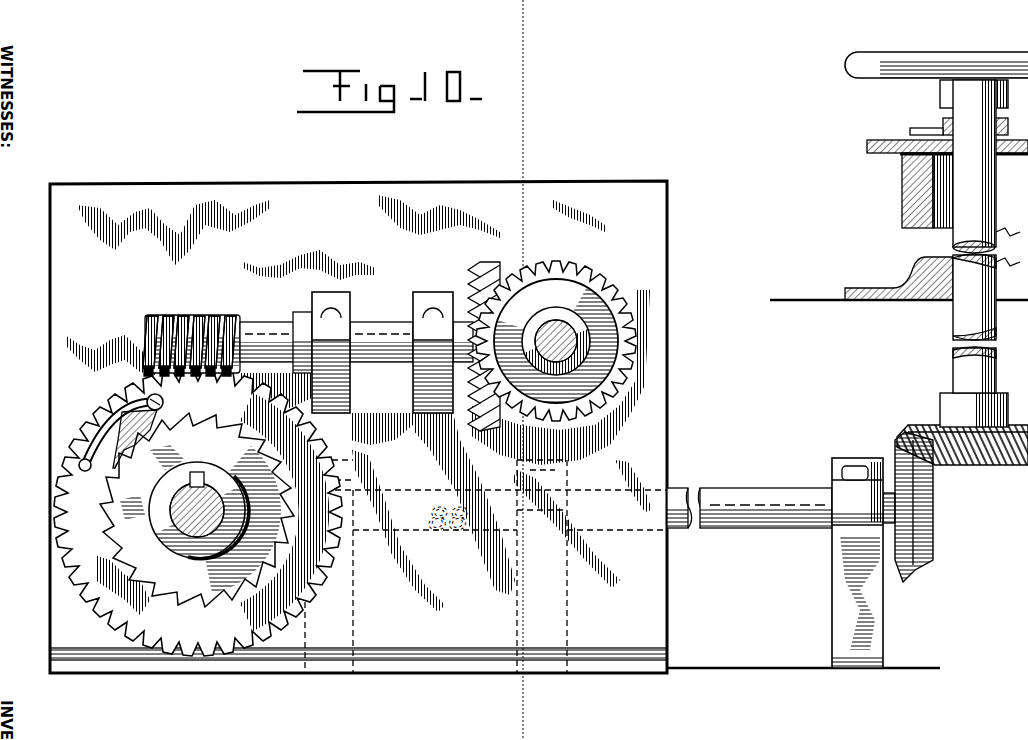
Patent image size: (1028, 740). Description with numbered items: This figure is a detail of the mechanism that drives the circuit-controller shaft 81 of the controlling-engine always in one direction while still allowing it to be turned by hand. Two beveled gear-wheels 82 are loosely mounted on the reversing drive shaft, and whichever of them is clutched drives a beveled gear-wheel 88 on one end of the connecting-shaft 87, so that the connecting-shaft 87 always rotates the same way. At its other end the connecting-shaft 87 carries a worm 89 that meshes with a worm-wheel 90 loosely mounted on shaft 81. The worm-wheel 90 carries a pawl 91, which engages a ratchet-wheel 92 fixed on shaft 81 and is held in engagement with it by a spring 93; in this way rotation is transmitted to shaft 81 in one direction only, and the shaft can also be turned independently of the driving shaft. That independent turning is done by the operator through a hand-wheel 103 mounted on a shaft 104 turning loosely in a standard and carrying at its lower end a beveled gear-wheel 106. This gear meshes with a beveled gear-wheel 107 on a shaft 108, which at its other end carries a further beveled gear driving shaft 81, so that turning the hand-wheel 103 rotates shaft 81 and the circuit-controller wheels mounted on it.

The circuit-controller shaft 81 is at (232, 576).
The beveled gear-wheels 82 is at (571, 266).
The connecting-shaft 87 is at (372, 326).
The beveled gear-wheel 88 is at (487, 268).
The worm 89 is at (205, 320).
The worm-wheel 90 is at (98, 428).
The pawl 91 is at (163, 404).
The ratchet-wheel 92 is at (197, 510).
The spring 93 is at (82, 450).
The hand-wheel 103 is at (866, 57).
The shaft 104 is at (957, 323).
The beveled gear-wheel 106 is at (992, 454).
The beveled gear-wheel 107 is at (925, 556).
The shaft 108 is at (716, 492).